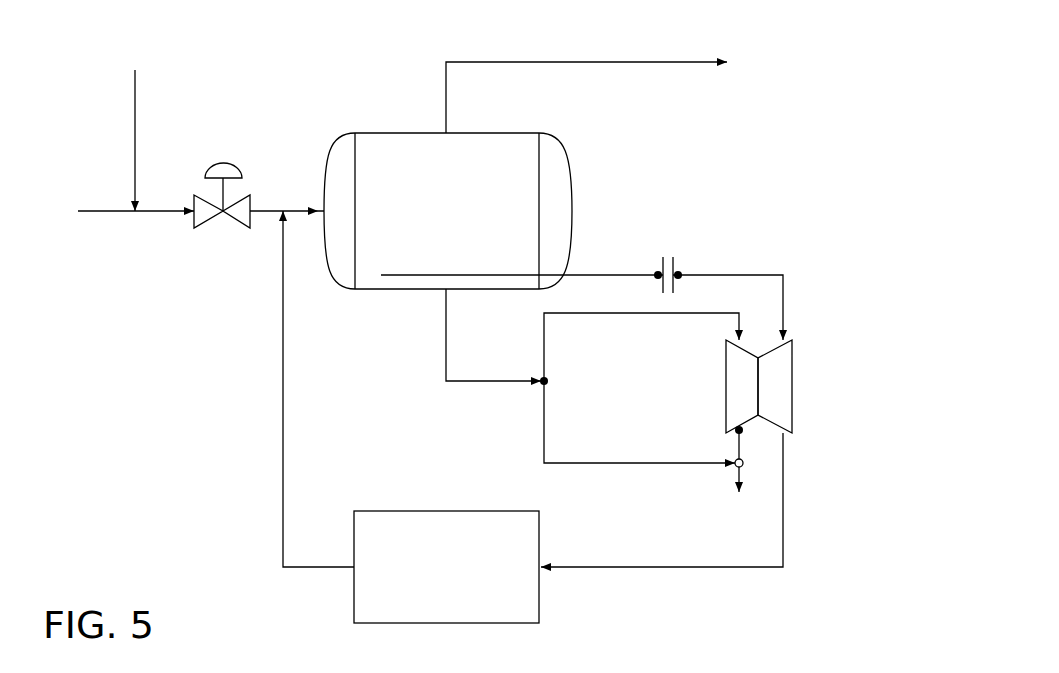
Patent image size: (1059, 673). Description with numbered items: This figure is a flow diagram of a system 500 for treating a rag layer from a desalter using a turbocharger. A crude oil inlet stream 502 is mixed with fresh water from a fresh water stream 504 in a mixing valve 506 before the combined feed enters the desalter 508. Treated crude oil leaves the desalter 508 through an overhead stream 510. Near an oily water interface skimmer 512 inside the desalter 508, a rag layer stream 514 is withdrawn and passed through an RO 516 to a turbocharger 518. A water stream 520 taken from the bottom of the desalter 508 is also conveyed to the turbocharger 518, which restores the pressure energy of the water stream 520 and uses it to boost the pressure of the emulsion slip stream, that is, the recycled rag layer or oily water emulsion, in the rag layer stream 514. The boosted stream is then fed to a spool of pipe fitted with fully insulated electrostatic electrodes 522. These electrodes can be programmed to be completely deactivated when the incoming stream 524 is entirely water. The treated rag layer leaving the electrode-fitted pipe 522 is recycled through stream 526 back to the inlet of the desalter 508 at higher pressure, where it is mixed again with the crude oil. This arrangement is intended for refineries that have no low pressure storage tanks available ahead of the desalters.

The system 500 is at (122, 513).
The crude oil inlet stream 502 is at (110, 209).
The fresh water stream 504 is at (137, 100).
The mixing valve 506 is at (238, 220).
The desalter 508 is at (475, 222).
The stream 510 is at (613, 62).
The oily water interface skimmer 512 is at (414, 278).
The rag layer stream 514 is at (608, 275).
The RO 516 is at (676, 262).
The turbocharger 518 is at (793, 400).
The water stream 520 is at (470, 385).
The spool of pipe fitted with fully insulated electrostatic electrodes 522 is at (475, 580).
The incoming stream 524 is at (660, 568).
The stream 526 is at (283, 402).